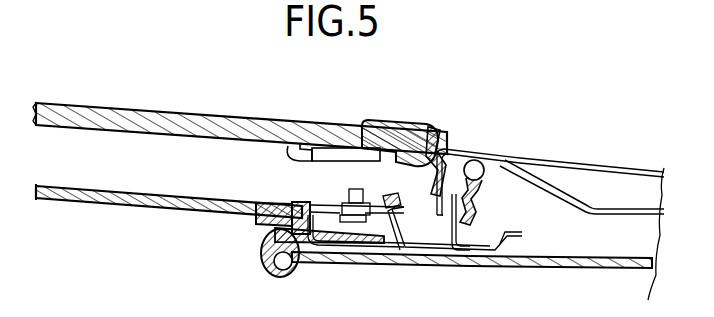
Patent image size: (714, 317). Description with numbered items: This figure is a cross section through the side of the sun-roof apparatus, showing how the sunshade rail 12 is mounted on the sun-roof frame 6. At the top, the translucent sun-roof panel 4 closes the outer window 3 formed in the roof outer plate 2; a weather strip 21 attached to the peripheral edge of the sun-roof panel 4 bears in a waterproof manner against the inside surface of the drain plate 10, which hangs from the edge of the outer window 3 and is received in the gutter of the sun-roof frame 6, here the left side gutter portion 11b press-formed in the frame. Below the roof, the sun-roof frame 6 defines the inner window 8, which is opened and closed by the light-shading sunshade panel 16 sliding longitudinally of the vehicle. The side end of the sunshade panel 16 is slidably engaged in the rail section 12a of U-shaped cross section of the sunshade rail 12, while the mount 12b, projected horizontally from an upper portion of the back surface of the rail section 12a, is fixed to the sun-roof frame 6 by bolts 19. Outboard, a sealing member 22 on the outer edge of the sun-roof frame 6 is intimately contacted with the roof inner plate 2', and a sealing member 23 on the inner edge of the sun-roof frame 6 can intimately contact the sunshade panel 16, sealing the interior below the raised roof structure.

The roof outer plate 2 is at (592, 212).
The roof inner plate 2' is at (582, 206).
The outer window 3 is at (432, 142).
The sun-roof panel 4 is at (150, 110).
The sun-roof frame 6 is at (396, 252).
The inner window 8 is at (264, 262).
The drain plate 10 is at (439, 214).
The left side gutter portion 11b is at (433, 266).
The sunshade rail 12 is at (278, 207).
The rail section 12a is at (292, 203).
The mount 12b is at (380, 196).
The sunshade panel 16 is at (118, 200).
The bolt 19 is at (354, 190).
The weather strip 21 is at (393, 122).
The sealing member 22 is at (488, 176).
The sealing member 23 is at (270, 238).